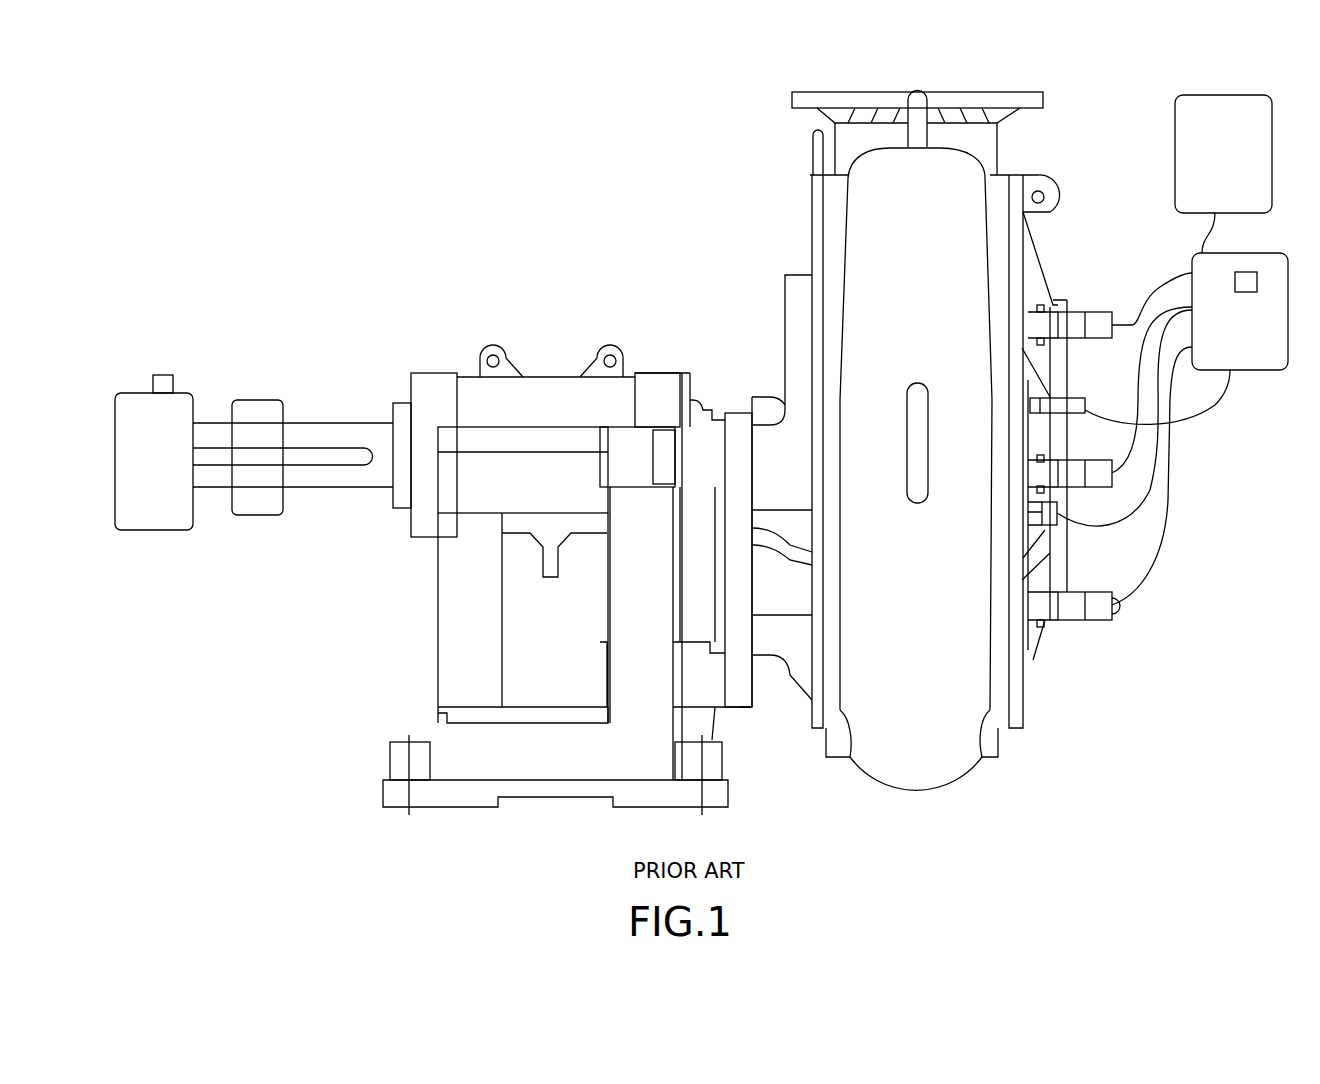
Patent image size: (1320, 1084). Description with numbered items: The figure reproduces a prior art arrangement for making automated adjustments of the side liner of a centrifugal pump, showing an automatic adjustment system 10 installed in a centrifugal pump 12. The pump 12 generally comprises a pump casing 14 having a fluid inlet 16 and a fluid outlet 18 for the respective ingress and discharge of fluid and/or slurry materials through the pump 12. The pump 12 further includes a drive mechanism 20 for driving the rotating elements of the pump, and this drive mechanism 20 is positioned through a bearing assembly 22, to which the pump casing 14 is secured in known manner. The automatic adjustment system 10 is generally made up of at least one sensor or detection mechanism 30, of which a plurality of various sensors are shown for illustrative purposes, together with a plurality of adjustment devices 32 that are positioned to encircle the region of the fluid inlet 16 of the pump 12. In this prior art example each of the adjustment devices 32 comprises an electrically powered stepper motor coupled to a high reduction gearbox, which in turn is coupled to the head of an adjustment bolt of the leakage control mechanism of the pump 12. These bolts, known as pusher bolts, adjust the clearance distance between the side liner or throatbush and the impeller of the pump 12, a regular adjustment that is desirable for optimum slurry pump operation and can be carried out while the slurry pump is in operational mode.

The automatic adjustment system 10 is at (1120, 225).
The centrifugal pump 12 is at (660, 288).
The pump casing 14 is at (874, 278).
The fluid inlet 16 is at (1055, 572).
The fluid outlet 18 is at (1010, 103).
The drive mechanism 20 is at (350, 437).
The bearing assembly 22 is at (548, 395).
The sensor or detection mechanism 30 is at (276, 358).
The adjustment devices 32 is at (1060, 285).